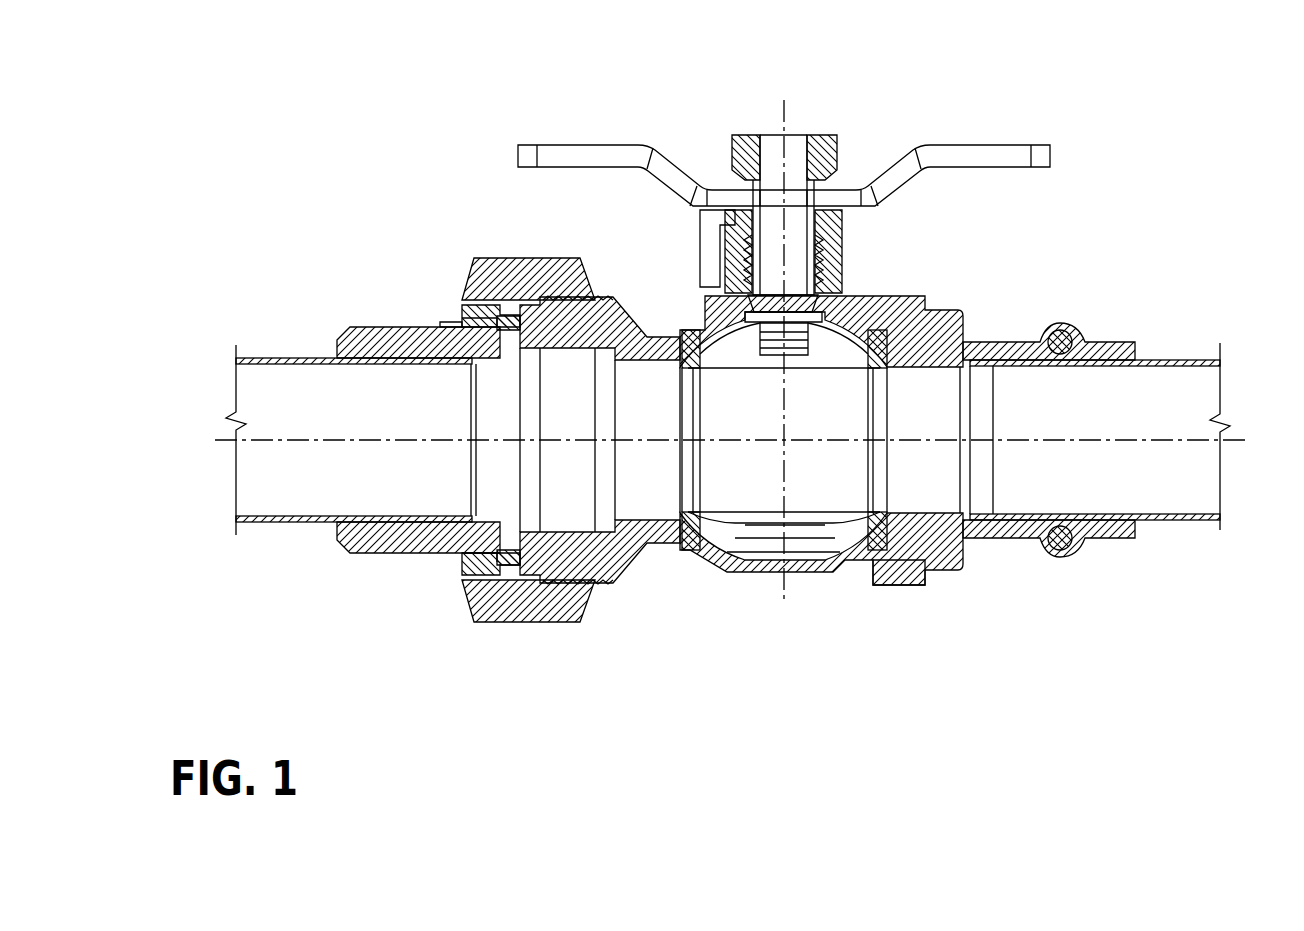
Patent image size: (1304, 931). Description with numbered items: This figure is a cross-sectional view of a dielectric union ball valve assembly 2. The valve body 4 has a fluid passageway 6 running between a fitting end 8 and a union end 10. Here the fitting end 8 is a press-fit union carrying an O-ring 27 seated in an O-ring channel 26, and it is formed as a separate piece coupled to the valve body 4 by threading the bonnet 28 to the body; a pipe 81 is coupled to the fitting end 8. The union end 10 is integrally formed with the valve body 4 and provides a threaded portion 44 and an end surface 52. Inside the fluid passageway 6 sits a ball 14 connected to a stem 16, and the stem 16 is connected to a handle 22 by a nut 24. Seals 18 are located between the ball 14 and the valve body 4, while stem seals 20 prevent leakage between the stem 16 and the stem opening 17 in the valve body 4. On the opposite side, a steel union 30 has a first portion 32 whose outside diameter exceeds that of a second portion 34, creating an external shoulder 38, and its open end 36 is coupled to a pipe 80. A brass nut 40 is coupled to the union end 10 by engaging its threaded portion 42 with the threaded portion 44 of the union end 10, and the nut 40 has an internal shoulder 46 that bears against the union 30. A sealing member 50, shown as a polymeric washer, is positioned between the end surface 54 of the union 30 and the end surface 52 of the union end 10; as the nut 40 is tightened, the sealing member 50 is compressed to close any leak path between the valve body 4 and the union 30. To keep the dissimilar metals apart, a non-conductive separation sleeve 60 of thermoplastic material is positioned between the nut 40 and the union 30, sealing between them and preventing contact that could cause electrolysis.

The dielectric union ball valve assembly 2 is at (914, 98).
The valve body 4 is at (816, 578).
The fluid passageway 6 is at (846, 436).
The fitting end 8 is at (1087, 346).
The union end 10 is at (586, 548).
The ball 14 is at (812, 330).
The stem 16 is at (770, 245).
The stem opening 17 is at (838, 232).
The seals 18 is at (700, 552).
The stem seals 20 is at (733, 298).
The handle 22 is at (604, 150).
The nut 24 is at (830, 138).
The O-ring channel 26 is at (1062, 326).
The O-ring 27 is at (1066, 550).
The bonnet 28 is at (892, 578).
The union 30 is at (358, 326).
The first portion 32 is at (502, 582).
The second portion 34 is at (378, 549).
The open end 36 is at (437, 488).
The external shoulder 38 is at (450, 322).
The nut 40 is at (510, 302).
The threaded portion 42 is at (530, 278).
The threaded portion 44 is at (590, 618).
The internal shoulder 46 is at (482, 562).
The sealing member 50 is at (516, 602).
The end surface 52 is at (472, 315).
The end surface 54 is at (422, 556).
The separation sleeve 60 is at (432, 320).
The pipe 80 is at (272, 522).
The pipe 81 is at (1187, 357).